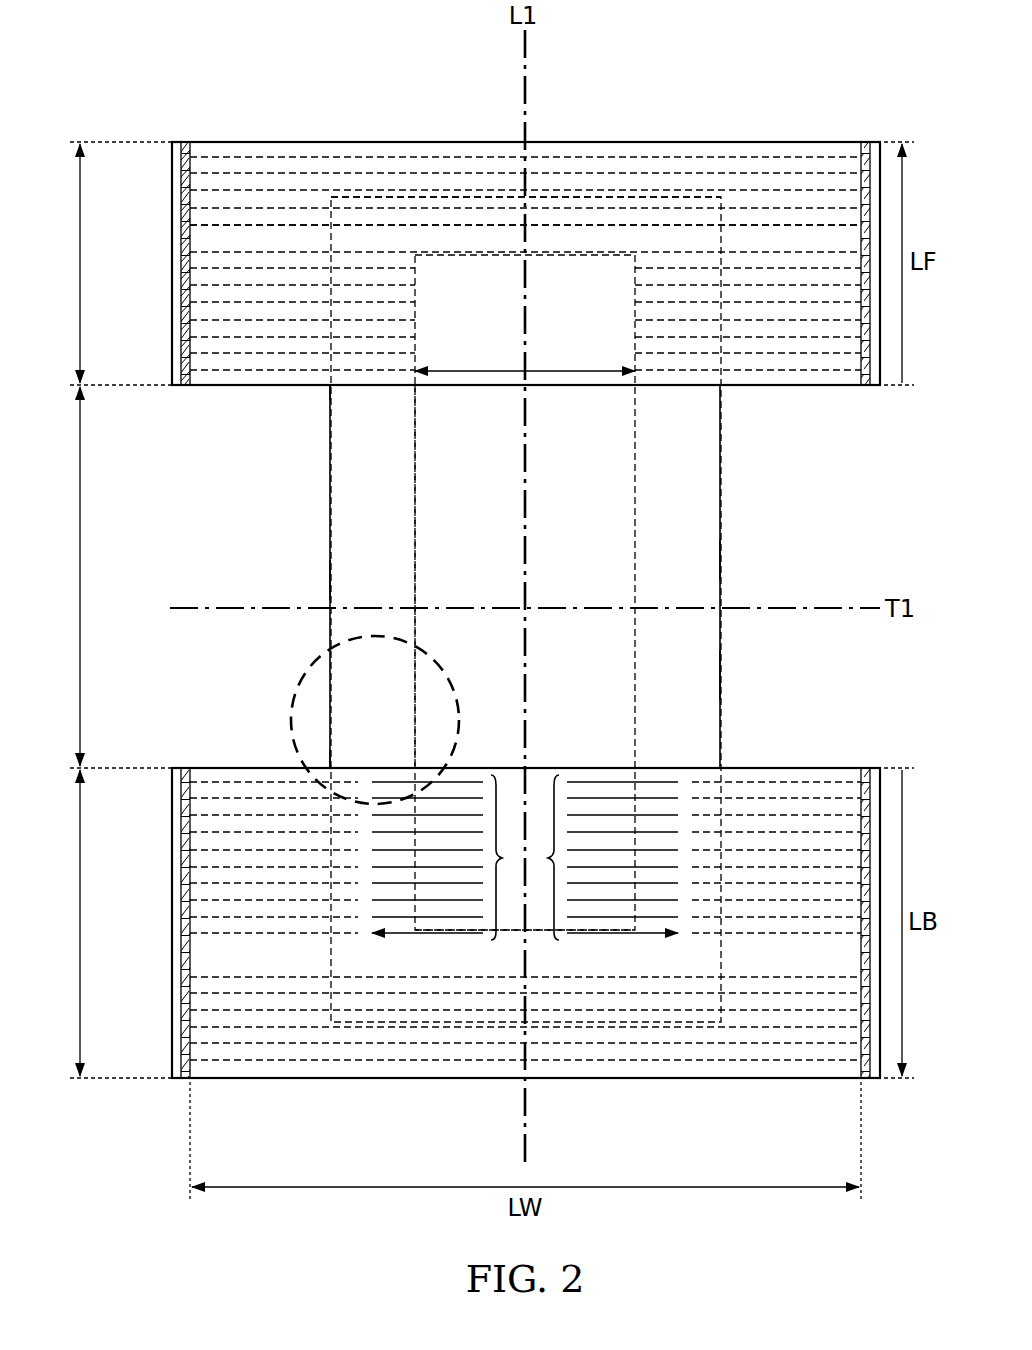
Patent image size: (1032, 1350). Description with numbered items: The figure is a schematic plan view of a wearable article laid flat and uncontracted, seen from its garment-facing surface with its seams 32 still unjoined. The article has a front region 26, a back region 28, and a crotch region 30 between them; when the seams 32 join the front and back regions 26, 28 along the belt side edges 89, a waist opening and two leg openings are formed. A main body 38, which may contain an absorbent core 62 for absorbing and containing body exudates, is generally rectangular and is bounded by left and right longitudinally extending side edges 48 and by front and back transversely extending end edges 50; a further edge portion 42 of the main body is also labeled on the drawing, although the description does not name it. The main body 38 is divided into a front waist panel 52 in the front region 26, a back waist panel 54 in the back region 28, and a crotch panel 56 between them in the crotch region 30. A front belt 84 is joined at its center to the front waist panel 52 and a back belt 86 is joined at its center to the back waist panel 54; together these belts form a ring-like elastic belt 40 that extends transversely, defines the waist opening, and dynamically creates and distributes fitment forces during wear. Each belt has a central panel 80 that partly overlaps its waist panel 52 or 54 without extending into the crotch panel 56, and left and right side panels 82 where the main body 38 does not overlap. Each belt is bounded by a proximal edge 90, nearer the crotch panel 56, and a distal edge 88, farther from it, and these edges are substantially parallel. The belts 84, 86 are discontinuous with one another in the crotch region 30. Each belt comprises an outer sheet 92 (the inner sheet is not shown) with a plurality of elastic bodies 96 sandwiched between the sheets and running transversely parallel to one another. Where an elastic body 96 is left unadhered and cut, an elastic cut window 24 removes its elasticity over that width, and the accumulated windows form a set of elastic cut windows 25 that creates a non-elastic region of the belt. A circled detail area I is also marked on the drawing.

The elastic cut window 24 is at (565, 368).
The set of elastic cut windows 25 is at (525, 958).
The front region 26 is at (78, 262).
The back region 28 is at (78, 924).
The crotch region 30 is at (78, 575).
The seams 32 is at (183, 138).
The main body 38 is at (724, 560).
The ring-like elastic belt 40 is at (672, 70).
The longitudinal side edge 42 is at (712, 668).
The side edges 48 is at (328, 498).
The end edges 50 is at (397, 196).
The front waist panel 52 is at (488, 340).
The back waist panel 54 is at (438, 970).
The crotch panel 56 is at (326, 576).
The absorbent core 62 is at (413, 526).
The central panel 80 is at (462, 178).
The side panel 82 is at (238, 348).
The front belt 84 is at (812, 142).
The back belt 86 is at (283, 1078).
The distal edge 88 is at (620, 142).
The side edges 89 is at (183, 222).
The proximal edge 90 is at (306, 386).
The outer sheet 92 is at (236, 150).
The elastic bodies 96 is at (200, 172).
The detail region I is at (308, 672).